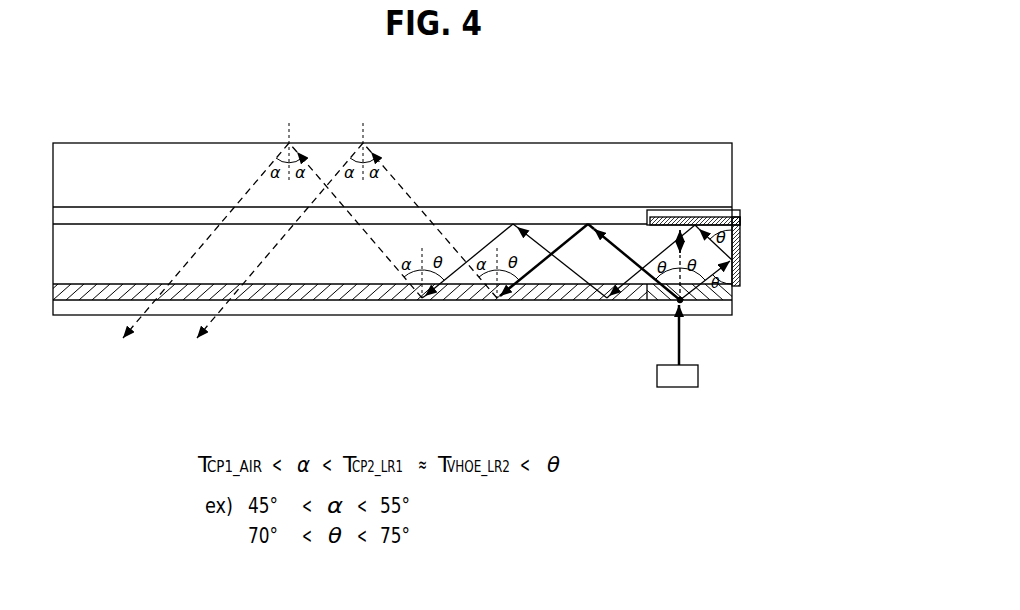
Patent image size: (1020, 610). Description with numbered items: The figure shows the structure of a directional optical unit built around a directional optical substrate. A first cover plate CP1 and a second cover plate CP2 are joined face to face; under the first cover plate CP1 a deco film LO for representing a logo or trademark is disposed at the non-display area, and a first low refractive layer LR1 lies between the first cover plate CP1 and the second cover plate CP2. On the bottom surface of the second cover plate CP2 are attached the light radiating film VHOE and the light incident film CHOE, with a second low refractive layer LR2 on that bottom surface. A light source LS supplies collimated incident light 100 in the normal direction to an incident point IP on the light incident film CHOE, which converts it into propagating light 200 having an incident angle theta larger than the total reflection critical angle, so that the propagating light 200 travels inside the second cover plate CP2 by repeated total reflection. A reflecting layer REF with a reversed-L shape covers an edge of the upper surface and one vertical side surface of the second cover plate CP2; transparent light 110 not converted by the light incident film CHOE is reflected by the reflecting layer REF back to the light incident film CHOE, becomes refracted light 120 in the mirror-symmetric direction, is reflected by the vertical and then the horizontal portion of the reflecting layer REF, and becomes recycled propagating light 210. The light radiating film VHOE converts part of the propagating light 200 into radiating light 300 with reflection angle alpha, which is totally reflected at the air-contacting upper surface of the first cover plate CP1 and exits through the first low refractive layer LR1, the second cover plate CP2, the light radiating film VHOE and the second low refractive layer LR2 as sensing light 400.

The incident light 100 is at (681, 337).
The transparent light 110 is at (663, 262).
The refracted light 120 is at (731, 190).
The propagating light 200 is at (571, 238).
The recycled propagating light 210 is at (493, 240).
The radiating light 300 is at (407, 187).
The sensing light 400 is at (138, 320).
The first cover plate CP1 is at (92, 155).
The second cover plate CP2 is at (87, 272).
The first low refractive layer LR1 is at (157, 217).
The second low refractive layer LR2 is at (602, 307).
The light radiating film VHOE is at (530, 292).
The light incident film CHOE is at (731, 288).
The deco film LO is at (740, 212).
The reflecting layer REF is at (741, 250).
The incident point IP is at (684, 303).
The light source LS is at (699, 376).